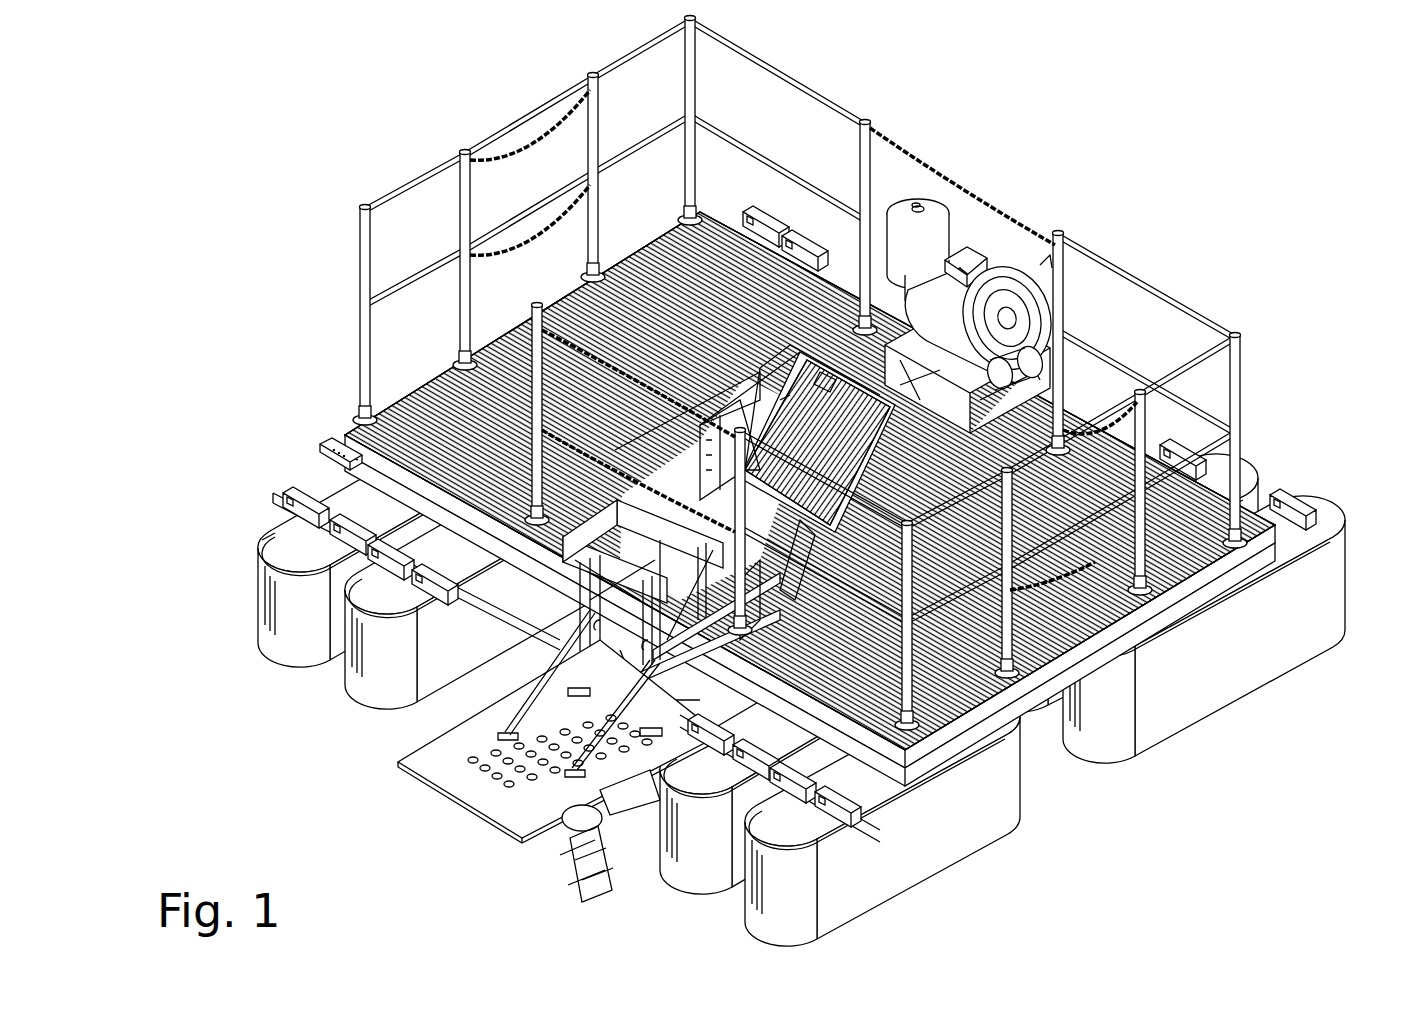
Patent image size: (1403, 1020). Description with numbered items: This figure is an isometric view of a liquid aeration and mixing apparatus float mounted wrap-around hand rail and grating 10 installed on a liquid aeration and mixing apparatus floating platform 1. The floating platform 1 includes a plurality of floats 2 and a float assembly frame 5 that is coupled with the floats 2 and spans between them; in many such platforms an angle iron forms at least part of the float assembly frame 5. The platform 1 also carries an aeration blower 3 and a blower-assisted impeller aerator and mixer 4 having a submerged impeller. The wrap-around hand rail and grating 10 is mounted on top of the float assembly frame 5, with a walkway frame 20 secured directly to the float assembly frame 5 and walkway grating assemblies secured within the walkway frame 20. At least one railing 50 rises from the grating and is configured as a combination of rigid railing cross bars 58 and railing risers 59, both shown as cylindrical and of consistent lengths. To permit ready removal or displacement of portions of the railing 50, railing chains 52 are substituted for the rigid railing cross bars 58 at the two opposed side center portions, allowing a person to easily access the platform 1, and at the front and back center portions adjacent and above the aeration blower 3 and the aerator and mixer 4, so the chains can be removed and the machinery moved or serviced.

The liquid aeration and mixing apparatus float mounted wrap-around hand rail and gra 10 is at (300, 128).
The liquid aeration and mixing apparatus floating platform 1 is at (255, 543).
The float 2 is at (1090, 728).
The aeration blower 3 is at (975, 243).
The blower-assisted impeller aerator and mixer 4 is at (553, 848).
The float assembly frame 5 is at (310, 447).
The walkway frame 20 is at (341, 417).
The railing 50 is at (352, 329).
The railing chain 52 is at (540, 240).
The rigid railing cross bar 58 is at (805, 197).
The railing riser 59 is at (365, 240).